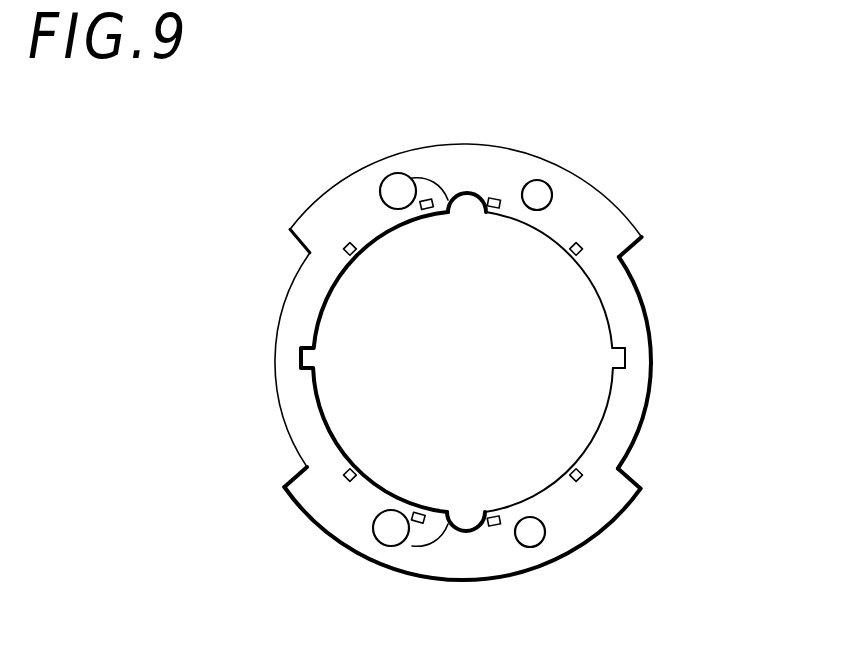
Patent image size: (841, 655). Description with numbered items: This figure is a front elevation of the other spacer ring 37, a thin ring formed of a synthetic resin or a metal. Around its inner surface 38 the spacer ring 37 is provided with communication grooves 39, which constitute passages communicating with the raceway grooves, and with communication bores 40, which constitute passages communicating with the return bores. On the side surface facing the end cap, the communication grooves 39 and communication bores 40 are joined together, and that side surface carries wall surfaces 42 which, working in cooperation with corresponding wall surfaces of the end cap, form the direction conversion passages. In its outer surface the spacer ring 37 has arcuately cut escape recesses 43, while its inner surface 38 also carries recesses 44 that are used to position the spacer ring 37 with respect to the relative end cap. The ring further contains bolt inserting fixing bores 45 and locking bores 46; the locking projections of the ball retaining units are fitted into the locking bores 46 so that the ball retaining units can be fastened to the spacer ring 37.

The spacer ring 37 is at (648, 215).
The inner surface 38 is at (604, 316).
The communication grooves 39 is at (467, 200).
The communication bores 40 is at (392, 185).
The wall surfaces 42 is at (449, 195).
The escape recesses 43 is at (279, 398).
The recesses 44 is at (318, 359).
The bolt inserting fixing bores 45 is at (538, 190).
The locking bores 46 is at (428, 210).